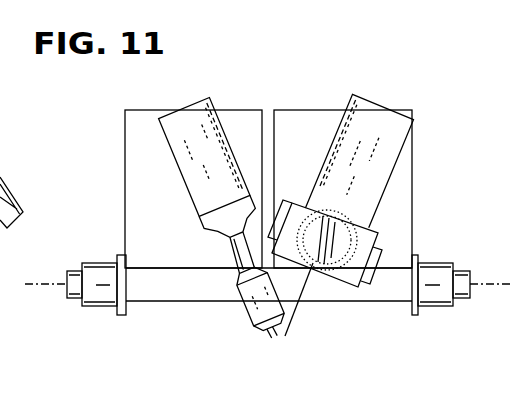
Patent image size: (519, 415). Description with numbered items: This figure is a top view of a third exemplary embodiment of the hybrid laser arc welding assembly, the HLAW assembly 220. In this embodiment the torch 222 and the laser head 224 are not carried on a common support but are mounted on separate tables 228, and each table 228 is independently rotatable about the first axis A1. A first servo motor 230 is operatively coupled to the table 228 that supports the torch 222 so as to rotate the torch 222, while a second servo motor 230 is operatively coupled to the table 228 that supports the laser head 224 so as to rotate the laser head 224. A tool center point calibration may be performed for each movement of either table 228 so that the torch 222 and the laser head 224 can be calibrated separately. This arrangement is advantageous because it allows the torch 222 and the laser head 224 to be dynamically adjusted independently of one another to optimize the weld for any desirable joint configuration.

The HLAW assembly 220 is at (421, 95).
The torch 222 is at (212, 128).
The laser head 224 is at (383, 150).
The table 228 is at (137, 180).
The servo motor 230 is at (66, 292).
The first axis A1 is at (56, 283).